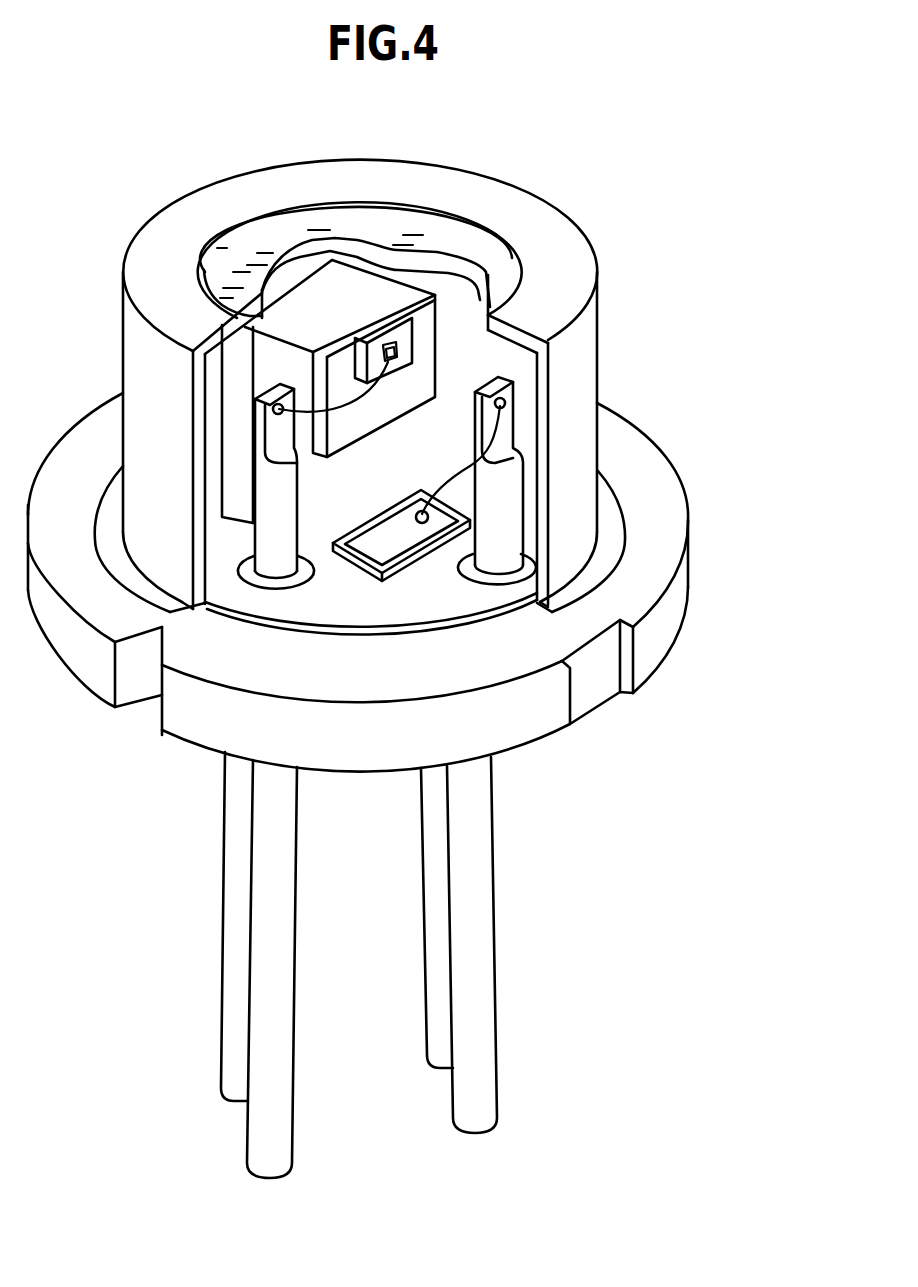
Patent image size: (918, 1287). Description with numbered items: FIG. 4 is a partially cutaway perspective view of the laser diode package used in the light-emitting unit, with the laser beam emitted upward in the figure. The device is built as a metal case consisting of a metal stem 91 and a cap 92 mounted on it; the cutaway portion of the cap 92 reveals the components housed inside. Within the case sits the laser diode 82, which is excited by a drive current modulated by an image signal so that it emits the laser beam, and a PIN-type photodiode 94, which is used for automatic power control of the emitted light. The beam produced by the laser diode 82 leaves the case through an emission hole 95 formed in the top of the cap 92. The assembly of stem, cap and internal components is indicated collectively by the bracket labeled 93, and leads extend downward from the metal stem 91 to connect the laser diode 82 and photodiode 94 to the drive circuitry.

The laser diode 82 is at (390, 357).
The metal stem 91 is at (762, 390).
The cap 92 is at (570, 450).
The package 93 is at (424, 653).
The PIN-type photodiode 94 is at (421, 533).
The emission hole 95 is at (229, 247).